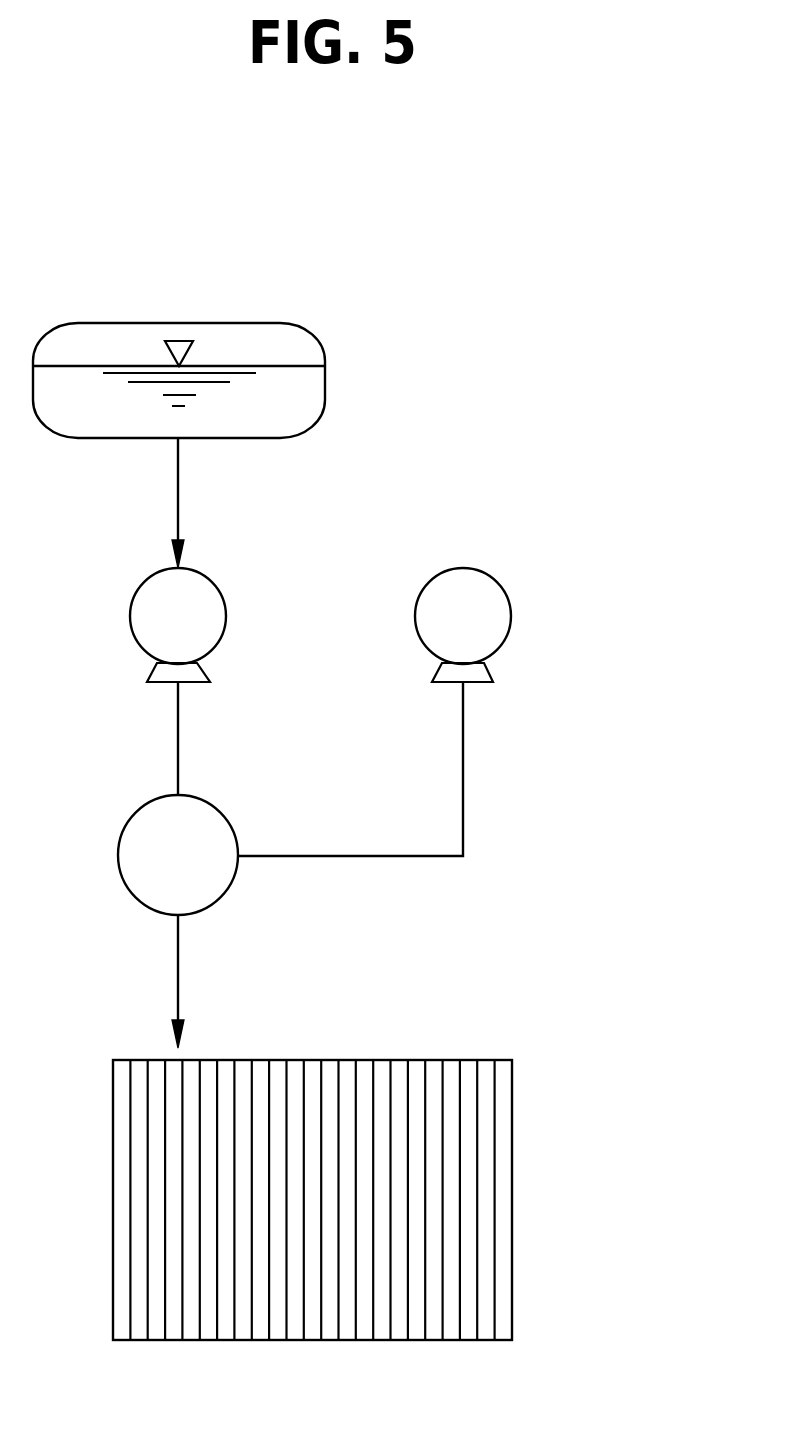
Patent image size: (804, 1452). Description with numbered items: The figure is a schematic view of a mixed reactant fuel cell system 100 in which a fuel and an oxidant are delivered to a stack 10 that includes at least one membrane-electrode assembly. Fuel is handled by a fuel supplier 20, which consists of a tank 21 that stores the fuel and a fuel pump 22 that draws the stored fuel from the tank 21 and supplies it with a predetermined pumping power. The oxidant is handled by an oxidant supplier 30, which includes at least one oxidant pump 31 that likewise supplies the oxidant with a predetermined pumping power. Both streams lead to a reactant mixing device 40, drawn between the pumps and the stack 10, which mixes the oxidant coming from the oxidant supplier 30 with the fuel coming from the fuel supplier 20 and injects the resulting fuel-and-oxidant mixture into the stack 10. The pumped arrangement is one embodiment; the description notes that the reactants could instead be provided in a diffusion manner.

The mixed reactant fuel cell system 100 is at (340, 196).
The stack 10 is at (390, 1036).
The fuel supplier 20 is at (297, 310).
The tank 21 is at (108, 440).
The fuel pump 22 is at (130, 620).
The oxidant supplier 30 is at (501, 582).
The oxidant pump 31 is at (470, 568).
The reactant mixing device 40 is at (104, 812).